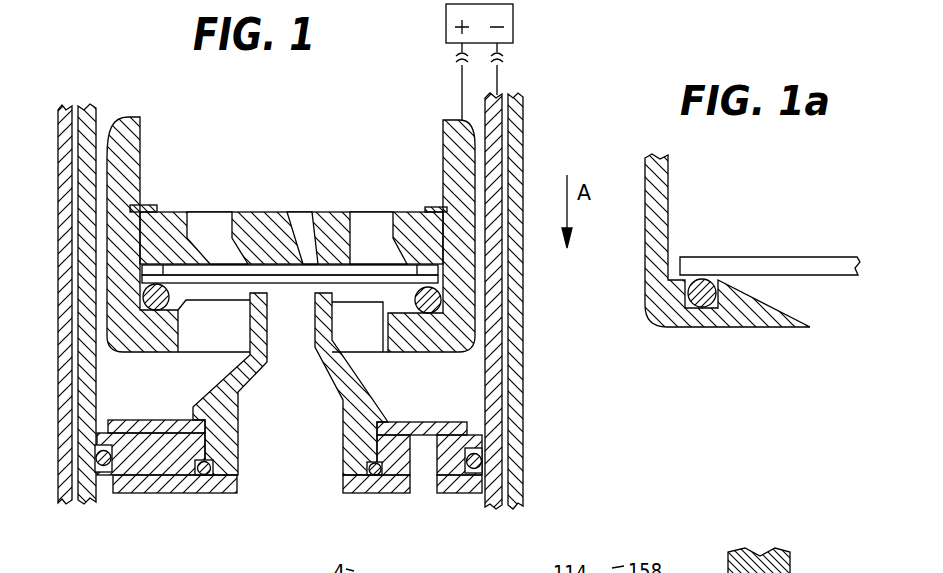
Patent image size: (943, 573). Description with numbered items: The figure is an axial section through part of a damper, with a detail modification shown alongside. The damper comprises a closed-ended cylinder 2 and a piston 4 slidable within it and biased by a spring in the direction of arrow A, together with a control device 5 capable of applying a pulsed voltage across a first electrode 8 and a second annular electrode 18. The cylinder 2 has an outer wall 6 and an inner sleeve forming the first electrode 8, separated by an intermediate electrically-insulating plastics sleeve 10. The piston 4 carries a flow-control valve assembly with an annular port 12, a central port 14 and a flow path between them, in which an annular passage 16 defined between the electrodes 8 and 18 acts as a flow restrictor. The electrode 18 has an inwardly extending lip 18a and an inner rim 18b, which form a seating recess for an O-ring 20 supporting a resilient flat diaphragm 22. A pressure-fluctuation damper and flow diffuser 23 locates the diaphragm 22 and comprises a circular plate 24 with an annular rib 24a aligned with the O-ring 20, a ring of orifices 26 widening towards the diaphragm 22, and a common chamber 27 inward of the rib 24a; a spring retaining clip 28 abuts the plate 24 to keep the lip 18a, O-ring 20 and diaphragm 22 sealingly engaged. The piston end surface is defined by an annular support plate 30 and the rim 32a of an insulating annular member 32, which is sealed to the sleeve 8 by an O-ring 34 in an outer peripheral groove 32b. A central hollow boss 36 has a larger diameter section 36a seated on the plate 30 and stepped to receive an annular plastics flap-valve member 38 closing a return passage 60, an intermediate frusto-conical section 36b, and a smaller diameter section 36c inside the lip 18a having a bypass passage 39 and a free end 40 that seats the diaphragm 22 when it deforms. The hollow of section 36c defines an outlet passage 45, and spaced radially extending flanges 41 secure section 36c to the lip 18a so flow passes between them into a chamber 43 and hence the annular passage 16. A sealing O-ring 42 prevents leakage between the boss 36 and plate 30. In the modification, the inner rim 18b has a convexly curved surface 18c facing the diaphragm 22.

In FIG. 1, the closed-ended cylinder 2 is at (550, 121).
In FIG. 1, the piston 4 is at (182, 514).
In FIG. 1, the control device 5 is at (513, 15).
In FIG. 1, the outer wall 6 is at (518, 332).
In FIG. 1, the first electrode 8 is at (493, 352).
In FIG. 1, the intermediate electrically-insulating plastics sleeve 10 is at (505, 296).
In FIG. 1, the annular port 12 is at (103, 130).
In FIG. 1, the central port 14 is at (294, 487).
In FIG. 1, the annular passage 16 is at (103, 237).
In FIG. 1, the second annular electrode 18 is at (123, 128).
In FIG. 1a, the second annular electrode 18 is at (660, 207).
In FIG. 1, the inwardly extending lip 18a is at (145, 337).
In FIG. 1a, the inwardly extending lip 18a is at (713, 325).
In FIG. 1, the inner rim 18b is at (188, 312).
In FIG. 1a, the inner rim 18b is at (772, 325).
In FIG. 1a, the convexly curved surface 18c is at (777, 297).
In FIG. 1, the O-ring 20 is at (158, 312).
In FIG. 1a, the O-ring 20 is at (700, 302).
In FIG. 1, the resilient flat diaphragm 22 is at (230, 275).
In FIG. 1a, the resilient flat diaphragm 22 is at (803, 257).
In FIG. 1, the pressure-fluctuation damper and flow diffuser 23 is at (262, 190).
In FIG. 1, the circular plate 24 is at (274, 199).
In FIG. 1, the annular rib 24a is at (423, 272).
In FIG. 1, the orifices 26 is at (210, 228).
In FIG. 1, the common chamber 27 is at (310, 293).
In FIG. 1, the spring retaining clip 28 is at (148, 206).
In FIG. 1, the annular support plate 30 is at (401, 494).
In FIG. 1, the annular member 32 is at (450, 442).
In FIG. 1, the rim 32a is at (468, 494).
In FIG. 1, the outer peripheral groove 32b is at (116, 477).
In FIG. 1, the O-ring 34 is at (478, 462).
In FIG. 1, the central hollow boss 36 is at (343, 420).
In FIG. 1, the larger diameter section 36a is at (232, 449).
In FIG. 1, the intermediate frusto-conical section 36b is at (262, 383).
In FIG. 1, the smaller diameter section 36c is at (267, 337).
In FIG. 1, the annular plastics flap-valve member 38 is at (418, 428).
In FIG. 1, the bypass passage 39 is at (315, 328).
In FIG. 1, the free end 40 is at (318, 297).
In FIG. 1, the radially extending flanges 41 is at (380, 305).
In FIG. 1, the sealing O-ring 42 is at (377, 482).
In FIG. 1, the chamber 43 is at (125, 406).
In FIG. 1, the outlet passage 45 is at (287, 272).
In FIG. 1, the return passage 60 is at (422, 478).